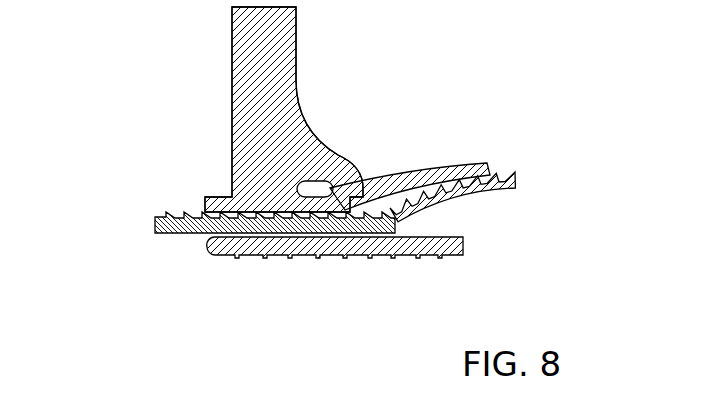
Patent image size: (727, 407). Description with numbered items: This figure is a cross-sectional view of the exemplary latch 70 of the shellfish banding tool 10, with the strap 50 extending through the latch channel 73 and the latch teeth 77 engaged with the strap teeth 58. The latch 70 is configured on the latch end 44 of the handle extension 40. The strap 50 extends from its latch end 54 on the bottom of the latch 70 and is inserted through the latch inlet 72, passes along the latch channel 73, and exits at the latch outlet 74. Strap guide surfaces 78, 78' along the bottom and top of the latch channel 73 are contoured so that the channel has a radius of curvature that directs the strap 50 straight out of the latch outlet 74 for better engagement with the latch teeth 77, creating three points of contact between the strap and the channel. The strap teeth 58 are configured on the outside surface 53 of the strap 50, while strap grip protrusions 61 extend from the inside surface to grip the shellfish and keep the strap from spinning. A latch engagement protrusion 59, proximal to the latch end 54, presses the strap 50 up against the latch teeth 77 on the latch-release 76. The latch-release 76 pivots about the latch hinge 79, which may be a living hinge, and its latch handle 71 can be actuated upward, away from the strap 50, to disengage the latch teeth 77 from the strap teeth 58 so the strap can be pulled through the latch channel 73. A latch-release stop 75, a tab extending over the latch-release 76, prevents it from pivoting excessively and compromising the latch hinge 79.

The adjustment assembly 10 is at (130, 52).
The handle extension 40 is at (254, 109).
The latch end 44 is at (260, 109).
The strap 50 is at (471, 184).
The outside surface 53 is at (471, 157).
The latch end 54 is at (365, 280).
The strap teeth 58 is at (381, 205).
The latch engagement protrusion 59 is at (365, 290).
The strap grip protrusions 61 is at (441, 255).
The latch 70 is at (365, 295).
The latch handle 71 is at (471, 168).
The latch inlet 72 is at (190, 215).
The latch channel 73 is at (365, 295).
The latch outlet 74 is at (365, 290).
The latch-release stop 75 is at (332, 170).
The latch-release 76 is at (420, 149).
The latch teeth 77 is at (405, 178).
The strap guide surface 78 is at (365, 295).
The strap guide surface 78' is at (276, 109).
The latch hinge 79 is at (336, 191).